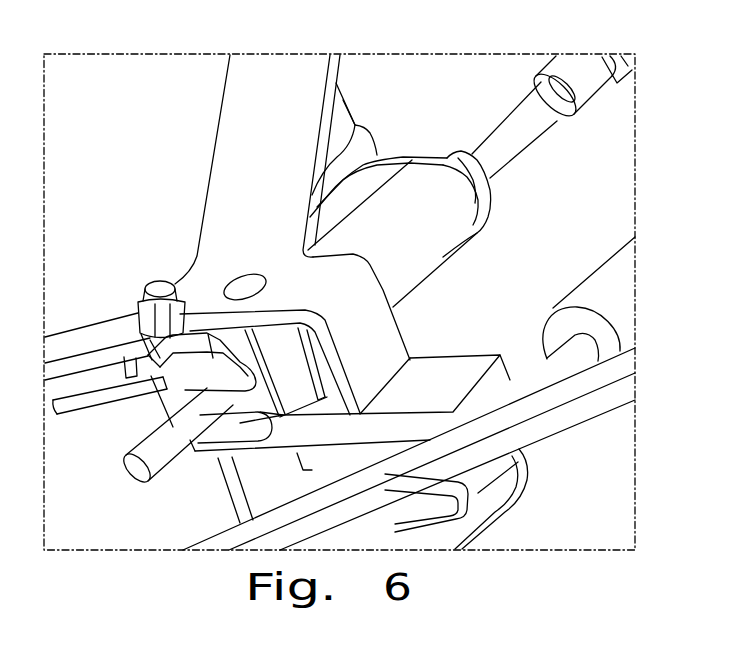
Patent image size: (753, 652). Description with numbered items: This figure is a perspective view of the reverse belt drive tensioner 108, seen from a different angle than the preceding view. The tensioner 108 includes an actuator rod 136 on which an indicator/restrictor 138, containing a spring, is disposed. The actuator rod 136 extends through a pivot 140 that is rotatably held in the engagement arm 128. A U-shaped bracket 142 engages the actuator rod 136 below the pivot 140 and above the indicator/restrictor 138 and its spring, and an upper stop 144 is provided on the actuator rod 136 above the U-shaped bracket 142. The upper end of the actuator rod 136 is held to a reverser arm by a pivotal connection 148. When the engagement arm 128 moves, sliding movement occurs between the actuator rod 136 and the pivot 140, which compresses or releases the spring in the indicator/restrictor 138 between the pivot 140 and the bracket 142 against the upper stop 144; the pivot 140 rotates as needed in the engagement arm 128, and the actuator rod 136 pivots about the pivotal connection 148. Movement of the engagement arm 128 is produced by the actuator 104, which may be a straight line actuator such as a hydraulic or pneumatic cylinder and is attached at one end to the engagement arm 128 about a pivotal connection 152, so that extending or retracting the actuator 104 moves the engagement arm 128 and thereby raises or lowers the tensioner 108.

The actuator 104 is at (522, 487).
The reverse belt drive tensioner 108 is at (461, 76).
The engagement arm 128 is at (238, 197).
The actuator rod 136 is at (508, 118).
The indicator/restrictor 138 is at (447, 255).
The pivot 140 is at (302, 370).
The U-shaped bracket 142 is at (392, 157).
The upper stop 144 is at (490, 182).
The pivotal connection 148 is at (622, 90).
The pivotal connection 152 is at (320, 470).